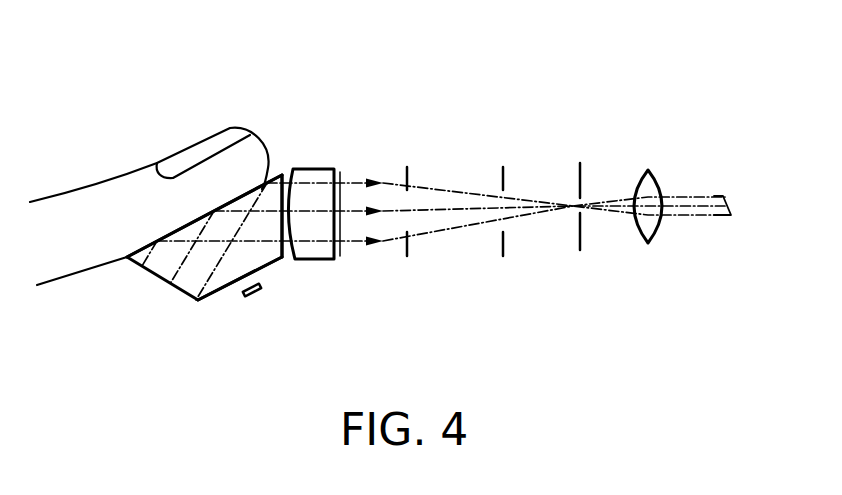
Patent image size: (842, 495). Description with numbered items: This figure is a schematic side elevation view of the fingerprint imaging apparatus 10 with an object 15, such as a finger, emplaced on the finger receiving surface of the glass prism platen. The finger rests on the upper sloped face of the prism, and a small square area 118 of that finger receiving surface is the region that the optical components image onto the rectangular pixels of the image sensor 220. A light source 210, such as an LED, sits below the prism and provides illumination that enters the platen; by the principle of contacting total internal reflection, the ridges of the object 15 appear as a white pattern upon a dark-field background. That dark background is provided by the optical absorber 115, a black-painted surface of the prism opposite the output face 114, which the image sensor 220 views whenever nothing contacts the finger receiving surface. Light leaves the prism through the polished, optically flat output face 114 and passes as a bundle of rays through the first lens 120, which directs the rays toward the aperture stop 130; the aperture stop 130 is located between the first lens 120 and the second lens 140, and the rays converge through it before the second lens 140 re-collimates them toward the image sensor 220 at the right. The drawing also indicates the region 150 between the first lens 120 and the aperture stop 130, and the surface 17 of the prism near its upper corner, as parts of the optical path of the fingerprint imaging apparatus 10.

The fingerprint imaging apparatus 10 is at (552, 326).
The object 15 is at (121, 177).
The fingerprint contact surface 17 is at (233, 202).
The output face 114 is at (233, 202).
The optical absorber 115 is at (155, 297).
The square area 118 is at (222, 289).
The first lens 120 is at (313, 168).
The aperture stop 130 is at (591, 160).
The second lens 140 is at (648, 243).
The optical stop assembly 150 is at (507, 272).
The light source 210 is at (254, 296).
The image sensor 220 is at (749, 202).